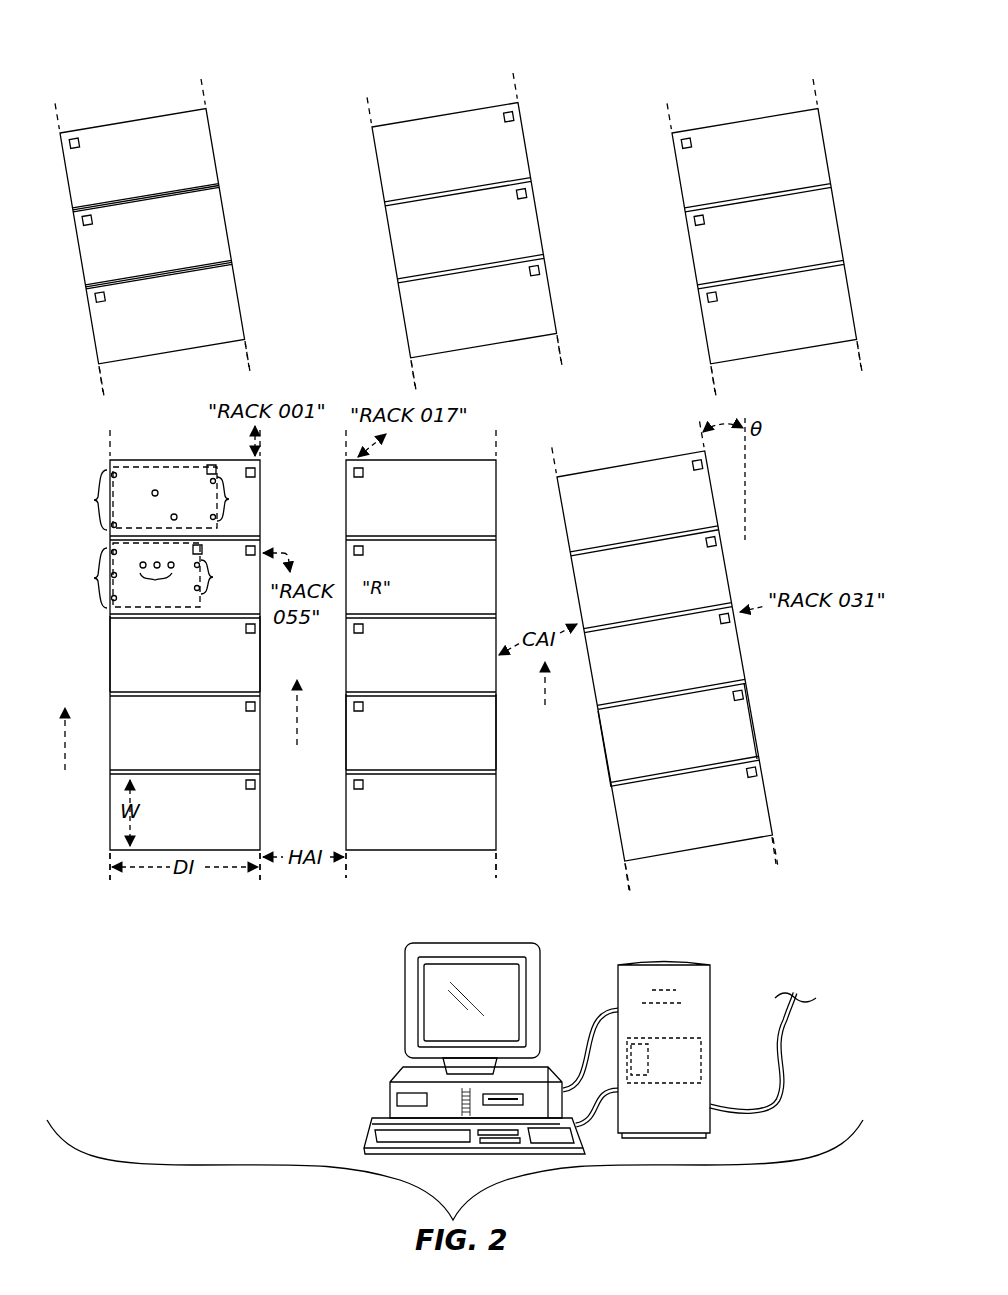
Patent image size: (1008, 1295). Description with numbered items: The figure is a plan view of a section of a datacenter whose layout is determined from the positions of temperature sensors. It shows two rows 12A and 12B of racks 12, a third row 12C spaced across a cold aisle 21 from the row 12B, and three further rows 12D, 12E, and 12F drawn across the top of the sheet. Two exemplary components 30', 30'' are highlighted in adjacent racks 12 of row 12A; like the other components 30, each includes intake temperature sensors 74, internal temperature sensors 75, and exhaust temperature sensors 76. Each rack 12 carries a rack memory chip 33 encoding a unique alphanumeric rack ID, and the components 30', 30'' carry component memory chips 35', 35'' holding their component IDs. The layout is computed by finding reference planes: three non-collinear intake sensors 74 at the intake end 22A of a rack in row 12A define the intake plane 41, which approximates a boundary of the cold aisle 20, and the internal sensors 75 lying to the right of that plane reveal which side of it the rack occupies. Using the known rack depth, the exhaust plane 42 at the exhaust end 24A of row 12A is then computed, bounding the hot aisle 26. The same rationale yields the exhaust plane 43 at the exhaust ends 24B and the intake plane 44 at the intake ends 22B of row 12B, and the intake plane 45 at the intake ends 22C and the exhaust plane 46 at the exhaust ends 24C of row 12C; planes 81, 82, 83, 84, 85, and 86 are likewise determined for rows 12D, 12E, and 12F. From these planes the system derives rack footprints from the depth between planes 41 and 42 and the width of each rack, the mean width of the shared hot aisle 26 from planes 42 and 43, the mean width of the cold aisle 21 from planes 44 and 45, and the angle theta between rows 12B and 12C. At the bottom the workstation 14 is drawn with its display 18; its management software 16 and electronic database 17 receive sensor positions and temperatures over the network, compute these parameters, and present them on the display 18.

The rack 12 is at (219, 164).
The row 12A is at (185, 897).
The row 12B is at (421, 672).
The third row 12C is at (706, 862).
The row 12D is at (131, 92).
The row 12E is at (443, 92).
The row 12F is at (743, 92).
The workstation 14 is at (587, 1042).
The management software 16 is at (694, 1052).
The electronic database 17 is at (632, 1055).
The display 18 is at (406, 960).
The cold aisle 20 is at (64, 752).
The cold aisle 21 is at (544, 697).
The hot aisle 26 is at (296, 726).
The intake end 22A is at (109, 652).
The intake ends 22B is at (496, 770).
The intake ends 22C is at (608, 797).
The rack side 24A is at (261, 628).
The exhaust ends 24B is at (346, 770).
The exhaust ends 24C is at (750, 730).
The component 30 is at (131, 583).
The component 30' is at (147, 473).
The rack memory chip 33 is at (256, 471).
The component memory chip 35' is at (172, 446).
The component memory chip 35'' is at (256, 541).
The intake plane 41 is at (108, 878).
The exhaust plane 42 is at (262, 878).
The exhaust plane 43 is at (348, 875).
The intake plane 44 is at (498, 870).
The intake plane 45 is at (626, 866).
The exhaust plane 46 is at (773, 841).
The intake temperature sensors 74 is at (90, 539).
The internal temperature sensors 75 is at (158, 496).
The exhaust temperature sensors 76 is at (225, 535).
The plane 81 is at (100, 372).
The plane 82 is at (252, 352).
The plane 83 is at (412, 368).
The plane 84 is at (556, 342).
The plane 85 is at (712, 372).
The plane 86 is at (864, 352).